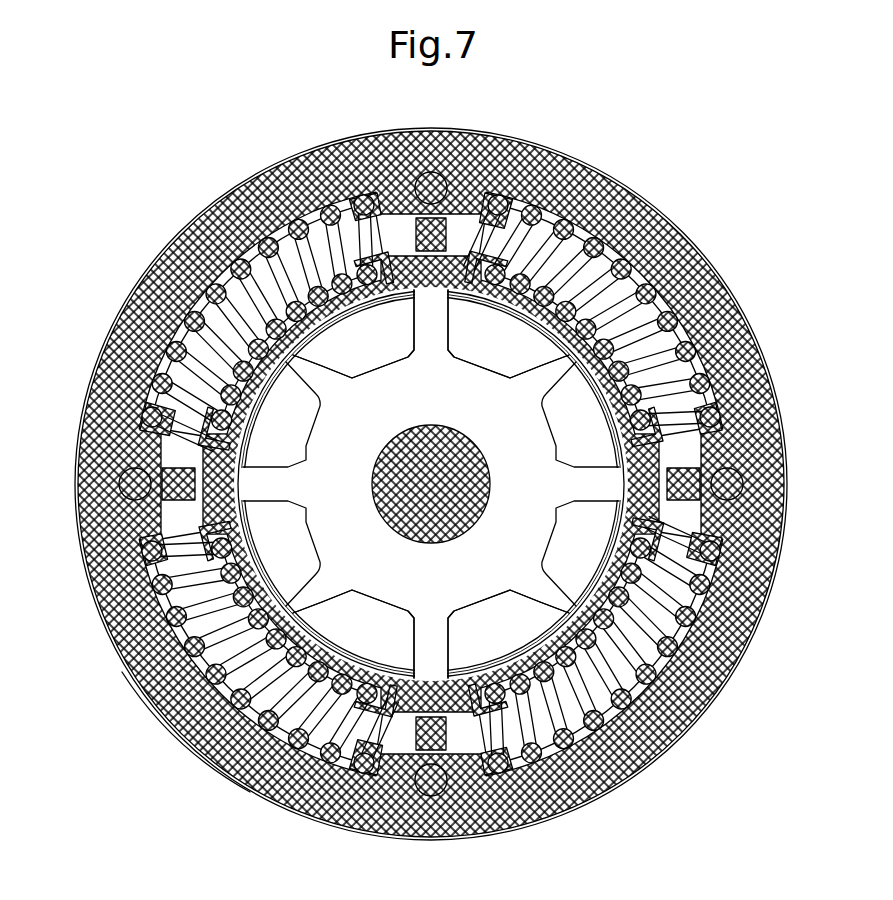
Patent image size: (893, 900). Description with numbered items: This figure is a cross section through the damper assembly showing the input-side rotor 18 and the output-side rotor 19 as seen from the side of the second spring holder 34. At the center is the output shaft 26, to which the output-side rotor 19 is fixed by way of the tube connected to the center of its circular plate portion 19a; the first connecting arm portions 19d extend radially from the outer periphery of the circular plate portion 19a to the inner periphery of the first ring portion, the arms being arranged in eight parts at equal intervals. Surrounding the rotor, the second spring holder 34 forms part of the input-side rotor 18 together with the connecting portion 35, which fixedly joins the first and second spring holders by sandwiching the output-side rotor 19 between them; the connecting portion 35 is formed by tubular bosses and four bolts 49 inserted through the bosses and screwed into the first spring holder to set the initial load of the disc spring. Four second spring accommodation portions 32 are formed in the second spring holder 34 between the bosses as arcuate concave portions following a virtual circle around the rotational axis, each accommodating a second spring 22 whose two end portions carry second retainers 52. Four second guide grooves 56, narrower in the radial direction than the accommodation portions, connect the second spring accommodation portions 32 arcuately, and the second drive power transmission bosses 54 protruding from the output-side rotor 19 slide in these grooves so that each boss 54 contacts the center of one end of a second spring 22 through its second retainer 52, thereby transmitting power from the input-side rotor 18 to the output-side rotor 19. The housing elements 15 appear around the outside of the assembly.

The motor housing 15 is at (601, 164).
The input-side rotor 18 is at (315, 826).
The output-side rotor 19 is at (442, 587).
The circular plate portion 19a is at (325, 447).
The first connecting arm portion 19d is at (417, 360).
The second spring 22 is at (262, 240).
The output shaft 26 is at (393, 453).
The second spring accommodation portion 32 is at (232, 272).
The second spring holder 34 is at (540, 158).
The connecting portion 35 is at (442, 816).
The bolt 49 is at (430, 172).
The second retainer 52 is at (375, 205).
The second drive power transmission boss 54 is at (180, 499).
The second guide groove 56 is at (397, 245).